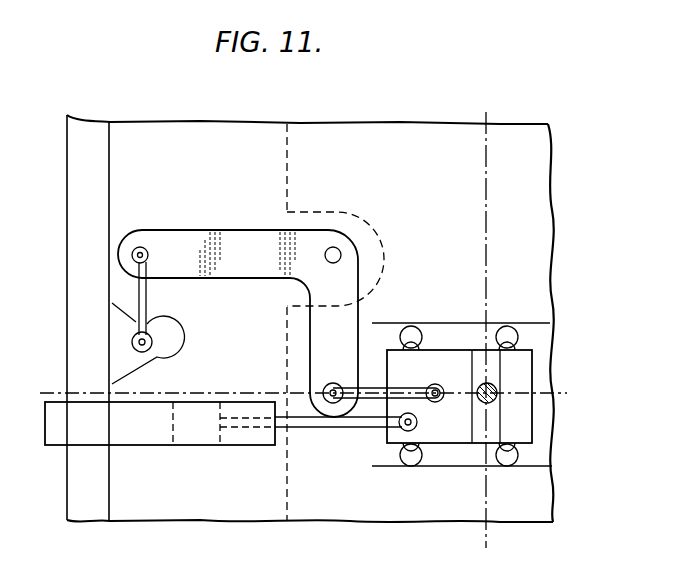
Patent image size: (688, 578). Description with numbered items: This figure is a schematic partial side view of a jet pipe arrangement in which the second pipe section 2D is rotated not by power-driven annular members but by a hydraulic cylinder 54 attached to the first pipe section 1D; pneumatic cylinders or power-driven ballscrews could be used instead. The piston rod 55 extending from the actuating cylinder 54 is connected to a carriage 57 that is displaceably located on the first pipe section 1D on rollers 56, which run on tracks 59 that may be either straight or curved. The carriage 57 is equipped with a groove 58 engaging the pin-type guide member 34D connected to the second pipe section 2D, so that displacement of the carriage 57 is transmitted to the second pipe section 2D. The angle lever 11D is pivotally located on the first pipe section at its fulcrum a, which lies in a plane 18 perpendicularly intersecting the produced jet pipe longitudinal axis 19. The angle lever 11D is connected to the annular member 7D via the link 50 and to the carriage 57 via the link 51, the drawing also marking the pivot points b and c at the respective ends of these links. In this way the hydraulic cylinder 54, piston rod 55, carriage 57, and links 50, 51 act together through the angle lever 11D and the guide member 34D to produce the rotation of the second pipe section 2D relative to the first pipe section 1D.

The angle lever 11D is at (309, 228).
The plane 18 is at (487, 225).
The link 50 is at (147, 299).
The jet pipe longitudinal axis 19 is at (208, 392).
The link 51 is at (372, 387).
The rollers 56 is at (487, 333).
The tracks 59 is at (534, 322).
The pin-type guide member 34D is at (481, 386).
The groove 58 is at (476, 433).
The carriage 57 is at (474, 474).
The piston rod 55 is at (330, 427).
The hydraulic cylinder 54 is at (165, 458).
The annular member 7D is at (96, 510).
The first pipe section 1D is at (232, 508).
The second pipe section 2D is at (390, 508).
The fulcrum a is at (328, 260).
The pin b is at (332, 383).
The pin c is at (149, 253).